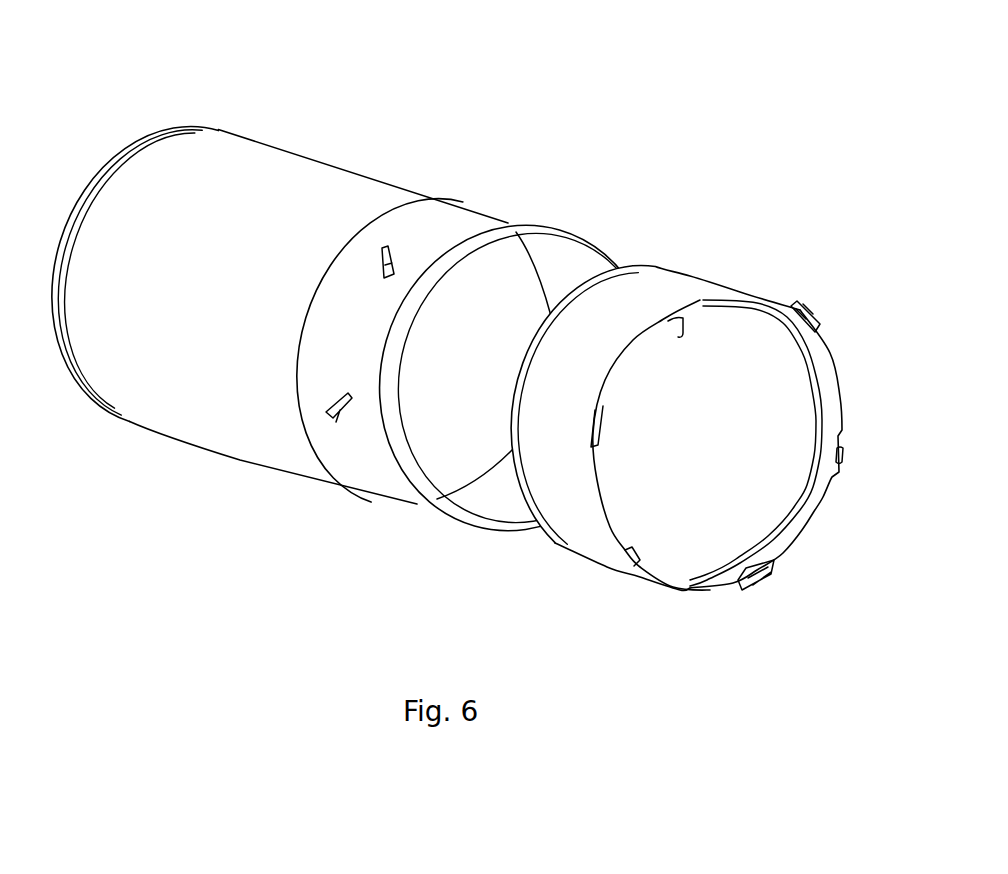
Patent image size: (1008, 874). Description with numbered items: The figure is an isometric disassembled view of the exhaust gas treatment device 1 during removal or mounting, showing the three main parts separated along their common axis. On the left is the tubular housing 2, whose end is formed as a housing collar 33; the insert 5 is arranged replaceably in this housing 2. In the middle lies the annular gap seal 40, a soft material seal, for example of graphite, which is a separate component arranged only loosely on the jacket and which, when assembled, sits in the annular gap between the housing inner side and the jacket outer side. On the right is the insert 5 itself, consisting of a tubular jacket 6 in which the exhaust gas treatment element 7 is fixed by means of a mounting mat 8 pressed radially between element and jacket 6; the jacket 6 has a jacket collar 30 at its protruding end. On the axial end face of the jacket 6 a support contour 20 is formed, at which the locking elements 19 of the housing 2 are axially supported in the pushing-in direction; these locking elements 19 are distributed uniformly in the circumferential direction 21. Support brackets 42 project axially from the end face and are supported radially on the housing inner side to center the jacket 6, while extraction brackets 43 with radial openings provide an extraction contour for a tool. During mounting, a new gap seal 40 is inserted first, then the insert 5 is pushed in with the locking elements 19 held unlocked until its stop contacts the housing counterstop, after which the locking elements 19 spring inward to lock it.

The exhaust gas treatment device 1 is at (613, 117).
The tubular housing 2 is at (276, 315).
The insert 5 is at (707, 420).
The tubular jacket 6 is at (690, 283).
The exhaust gas treatment element 7 is at (785, 402).
The mounting mat 8 is at (798, 508).
The locking element 19 is at (395, 253).
The support contour 20 is at (600, 512).
The circumferential direction 21 is at (298, 287).
The jacket collar 30 is at (511, 378).
The housing collar 33 is at (91, 190).
The gap seal 40 is at (397, 458).
The support bracket 42 is at (809, 323).
The extraction bracket 43 is at (677, 322).